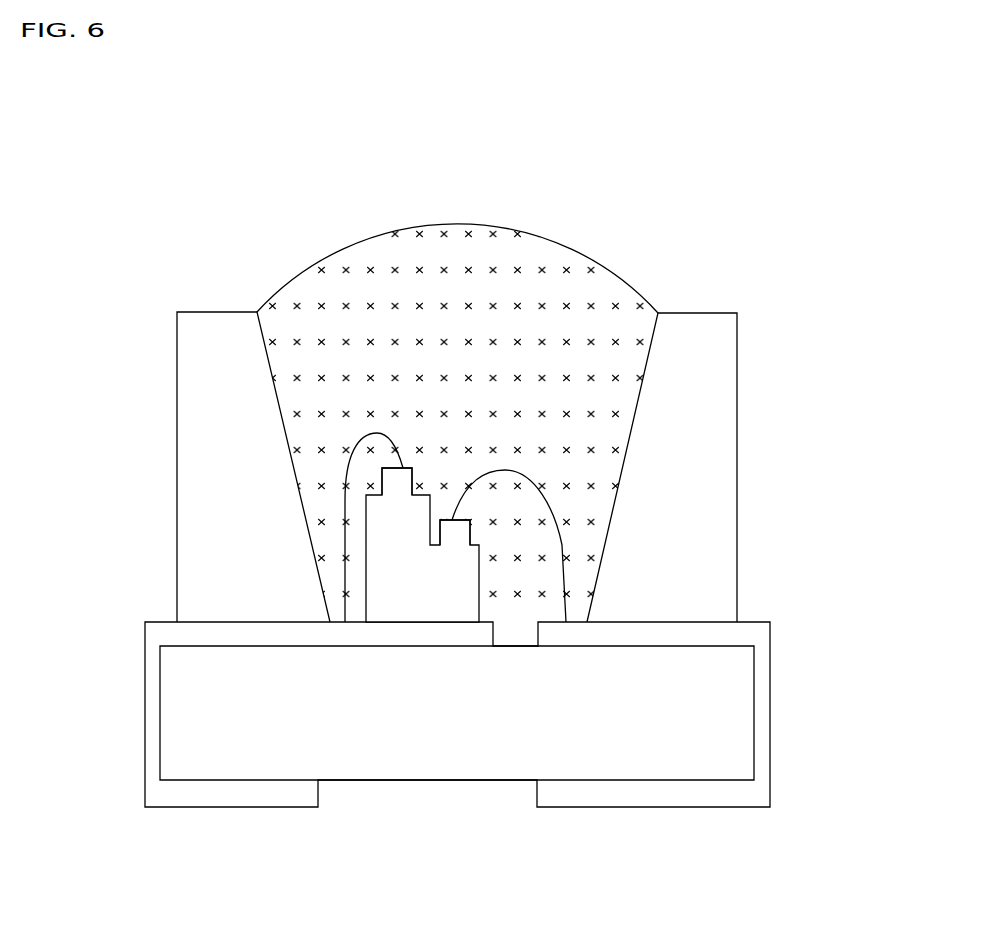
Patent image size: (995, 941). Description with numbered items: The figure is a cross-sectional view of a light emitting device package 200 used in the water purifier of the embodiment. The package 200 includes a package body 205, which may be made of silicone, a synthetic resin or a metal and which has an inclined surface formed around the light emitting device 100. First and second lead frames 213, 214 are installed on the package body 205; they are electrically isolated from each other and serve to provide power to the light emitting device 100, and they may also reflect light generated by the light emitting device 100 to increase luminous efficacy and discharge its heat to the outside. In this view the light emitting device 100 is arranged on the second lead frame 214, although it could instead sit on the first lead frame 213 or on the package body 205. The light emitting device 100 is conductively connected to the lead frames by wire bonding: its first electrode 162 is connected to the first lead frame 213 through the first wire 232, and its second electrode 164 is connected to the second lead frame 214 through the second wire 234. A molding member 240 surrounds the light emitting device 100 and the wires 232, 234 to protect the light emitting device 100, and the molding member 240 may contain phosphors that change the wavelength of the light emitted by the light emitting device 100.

The light emitting device 100 is at (419, 514).
The molding member 240 is at (528, 262).
The light emitting device package 200 is at (763, 201).
The package body 205 is at (725, 478).
The first wire 232 is at (553, 548).
The second wire 234 is at (343, 542).
The first lead frame 213 is at (762, 713).
The second lead frame 214 is at (152, 712).
The first electrode 162 is at (457, 538).
The second electrode 164 is at (400, 487).